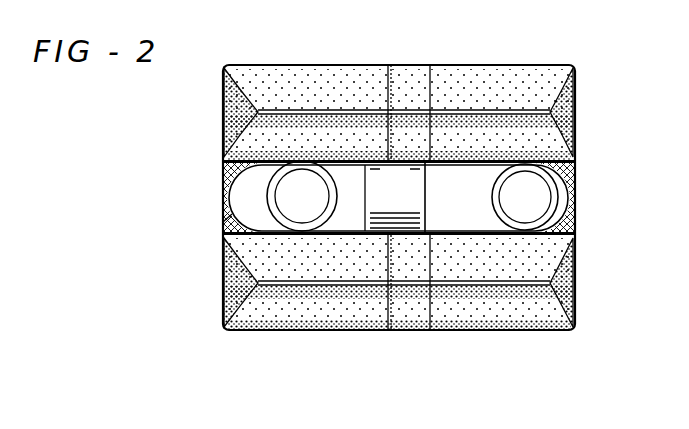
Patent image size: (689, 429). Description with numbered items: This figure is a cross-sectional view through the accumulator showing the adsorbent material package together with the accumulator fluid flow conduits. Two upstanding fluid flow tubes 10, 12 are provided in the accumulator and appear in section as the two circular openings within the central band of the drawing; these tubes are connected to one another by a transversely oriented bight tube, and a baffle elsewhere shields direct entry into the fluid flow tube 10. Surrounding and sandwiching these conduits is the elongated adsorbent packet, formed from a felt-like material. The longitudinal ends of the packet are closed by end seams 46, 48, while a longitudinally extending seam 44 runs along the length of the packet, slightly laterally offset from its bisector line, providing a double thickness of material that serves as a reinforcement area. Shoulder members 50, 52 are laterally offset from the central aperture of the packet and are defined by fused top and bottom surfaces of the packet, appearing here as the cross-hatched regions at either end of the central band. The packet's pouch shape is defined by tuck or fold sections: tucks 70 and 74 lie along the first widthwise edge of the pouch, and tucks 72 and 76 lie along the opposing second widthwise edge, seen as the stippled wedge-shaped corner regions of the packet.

The fluid flow tube 10 is at (285, 193).
The fluid flow tube 12 is at (540, 205).
The longitudinally extending seam 44 is at (413, 332).
The end seam 46 is at (495, 108).
The end seam 48 is at (514, 332).
The shoulder member 50 is at (573, 170).
The shoulder member 52 is at (228, 231).
The tuck or fold section 70 is at (573, 110).
The tuck or fold section 72 is at (224, 131).
The tuck or fold section 74 is at (573, 283).
The tuck or fold section 76 is at (228, 294).